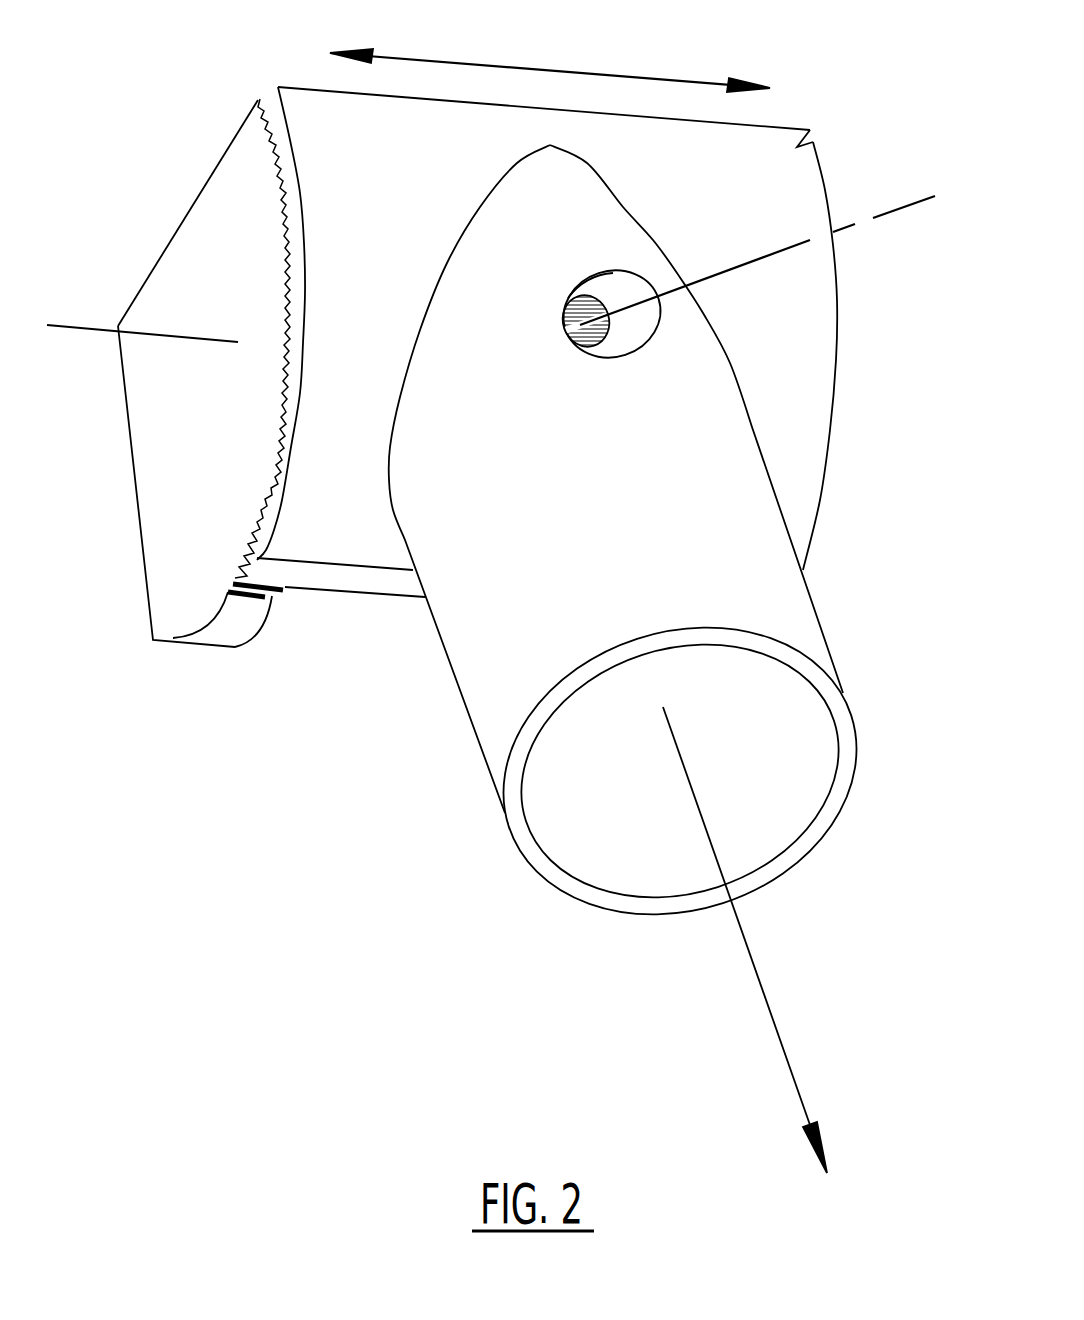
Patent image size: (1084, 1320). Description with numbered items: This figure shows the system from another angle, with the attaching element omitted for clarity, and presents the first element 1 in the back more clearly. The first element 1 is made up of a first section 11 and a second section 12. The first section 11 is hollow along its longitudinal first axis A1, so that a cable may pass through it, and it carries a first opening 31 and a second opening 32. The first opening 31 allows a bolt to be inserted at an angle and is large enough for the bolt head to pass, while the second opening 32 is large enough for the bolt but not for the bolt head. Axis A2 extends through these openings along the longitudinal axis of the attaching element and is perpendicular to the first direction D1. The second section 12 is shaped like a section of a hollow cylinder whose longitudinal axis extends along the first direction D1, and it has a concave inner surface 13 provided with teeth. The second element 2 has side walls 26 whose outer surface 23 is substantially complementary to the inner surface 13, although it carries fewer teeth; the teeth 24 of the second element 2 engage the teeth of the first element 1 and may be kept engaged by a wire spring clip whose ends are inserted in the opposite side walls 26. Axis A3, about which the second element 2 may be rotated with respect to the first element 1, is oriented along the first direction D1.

The first element 1 is at (808, 627).
The second element 2 is at (155, 492).
The first section 11 is at (435, 735).
The second section 12 is at (797, 147).
The inner surface 13 is at (277, 113).
The outer surface 23 is at (218, 628).
The teeth 24 is at (270, 597).
The side walls 26 is at (180, 257).
The first opening 31 is at (620, 295).
The second opening 32 is at (618, 390).
The first axis A1 is at (762, 940).
The axis A2 is at (770, 239).
The axis A3 is at (140, 307).
The first direction D1 is at (550, 56).